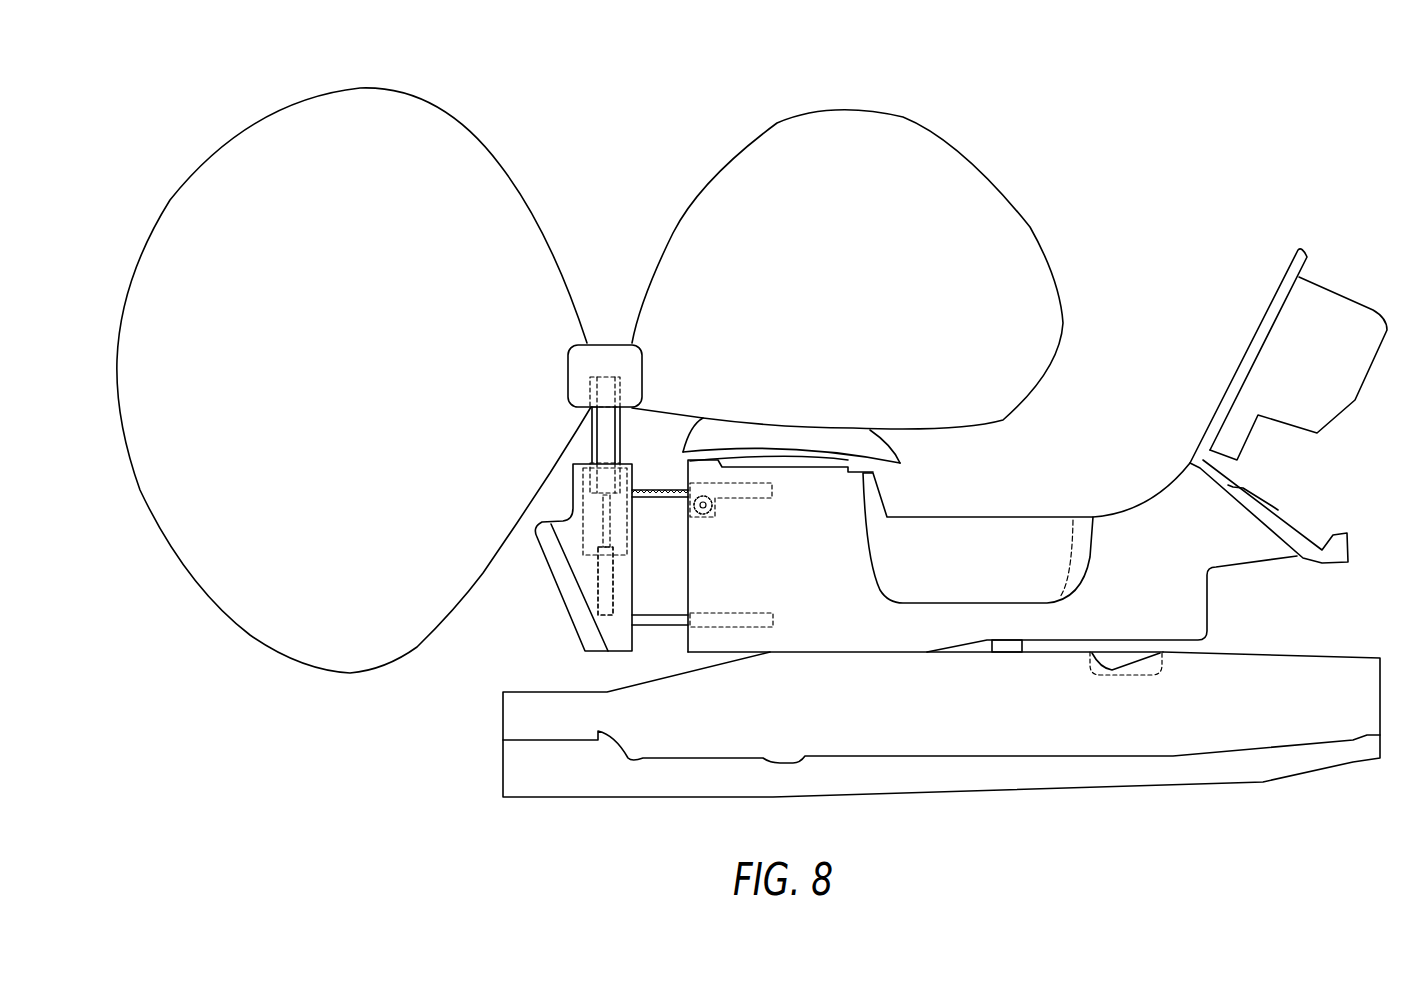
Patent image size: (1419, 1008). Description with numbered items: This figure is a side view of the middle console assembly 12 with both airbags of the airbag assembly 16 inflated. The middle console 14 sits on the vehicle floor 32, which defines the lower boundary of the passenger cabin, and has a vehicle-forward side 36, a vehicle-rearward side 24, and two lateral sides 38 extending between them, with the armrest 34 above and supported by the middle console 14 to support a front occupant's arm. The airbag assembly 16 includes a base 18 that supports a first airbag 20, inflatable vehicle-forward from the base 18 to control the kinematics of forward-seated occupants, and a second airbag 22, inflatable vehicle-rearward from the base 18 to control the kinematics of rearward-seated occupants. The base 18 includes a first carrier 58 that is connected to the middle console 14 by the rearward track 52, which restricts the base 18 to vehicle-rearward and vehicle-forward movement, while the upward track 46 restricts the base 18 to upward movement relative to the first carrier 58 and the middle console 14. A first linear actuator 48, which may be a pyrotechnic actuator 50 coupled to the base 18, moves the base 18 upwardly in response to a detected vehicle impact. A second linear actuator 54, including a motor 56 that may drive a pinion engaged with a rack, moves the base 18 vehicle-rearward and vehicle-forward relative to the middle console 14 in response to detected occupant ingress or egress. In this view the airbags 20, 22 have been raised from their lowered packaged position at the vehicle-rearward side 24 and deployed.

The middle console assembly 12 is at (1197, 217).
The middle console 14 is at (847, 598).
The airbag assembly 16 is at (669, 100).
The base 18 is at (585, 407).
The first airbag 20 is at (207, 173).
The second airbag 22 is at (987, 167).
The vehicle-rearward side 24 is at (575, 483).
The floor 32 is at (1287, 653).
The armrest 34 is at (878, 442).
The vehicle-forward side 36 is at (878, 553).
The lateral sides 38 is at (837, 524).
The upward track 46 is at (583, 537).
The first linear actuator 48 is at (590, 590).
The pyrotechnic actuator 50 is at (538, 605).
The rearward track 52 is at (760, 483).
The second linear actuator 54 is at (710, 512).
The motor 56 is at (747, 529).
The first carrier 58 is at (590, 445).